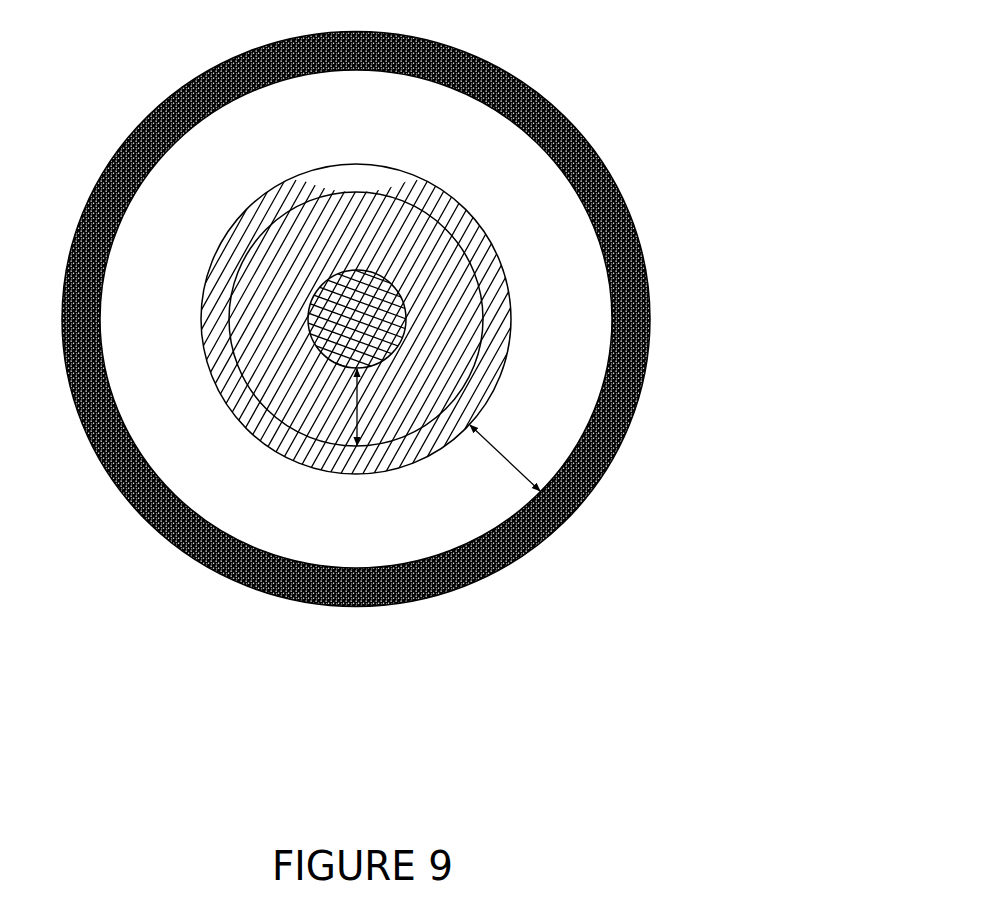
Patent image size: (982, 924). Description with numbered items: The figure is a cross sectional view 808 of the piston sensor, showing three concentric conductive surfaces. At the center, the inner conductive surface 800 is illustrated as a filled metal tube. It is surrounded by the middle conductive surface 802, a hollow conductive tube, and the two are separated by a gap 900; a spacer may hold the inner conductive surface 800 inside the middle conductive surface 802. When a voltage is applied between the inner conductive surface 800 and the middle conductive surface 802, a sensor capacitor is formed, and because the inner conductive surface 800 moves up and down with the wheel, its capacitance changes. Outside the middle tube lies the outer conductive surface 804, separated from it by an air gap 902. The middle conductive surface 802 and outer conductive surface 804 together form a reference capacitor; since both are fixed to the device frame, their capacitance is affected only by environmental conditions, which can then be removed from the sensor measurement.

The inner conductive surface 800 is at (406, 307).
The middle conductive surface 802 is at (512, 318).
The outer conductive surface 804 is at (650, 317).
The cross sectional view 808 is at (436, 361).
The gap 900 is at (357, 408).
The gap 902 is at (508, 458).